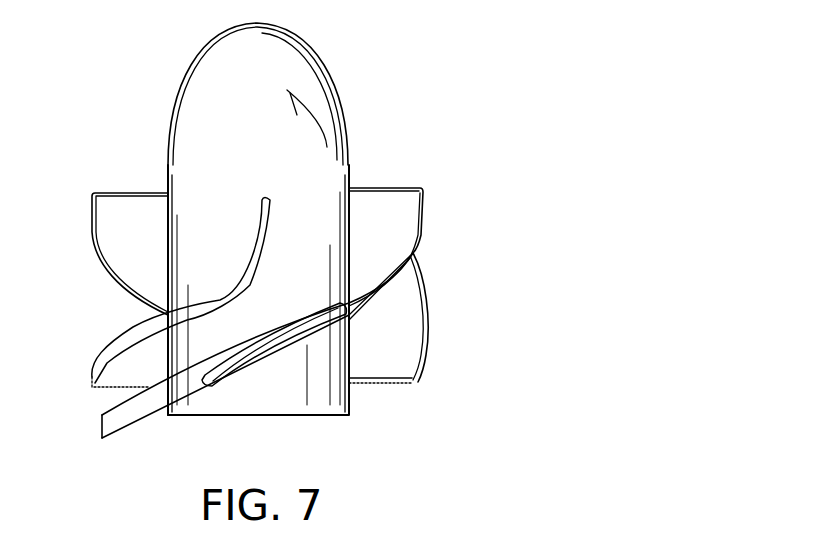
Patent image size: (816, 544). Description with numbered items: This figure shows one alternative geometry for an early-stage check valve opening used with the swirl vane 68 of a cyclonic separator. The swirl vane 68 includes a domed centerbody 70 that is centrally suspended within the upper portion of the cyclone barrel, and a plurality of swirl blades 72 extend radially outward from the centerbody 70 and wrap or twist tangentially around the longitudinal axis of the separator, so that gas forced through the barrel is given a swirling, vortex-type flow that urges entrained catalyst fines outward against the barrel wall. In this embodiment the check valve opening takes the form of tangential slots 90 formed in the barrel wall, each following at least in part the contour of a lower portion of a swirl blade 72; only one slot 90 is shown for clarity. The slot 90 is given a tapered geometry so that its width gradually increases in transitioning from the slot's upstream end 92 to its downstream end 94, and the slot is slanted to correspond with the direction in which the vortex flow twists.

The swirl vane device 68 is at (428, 59).
The domed centerbody 70 is at (199, 80).
The swirl blades 72 is at (92, 217).
The tangential slot 90 is at (196, 397).
The upstream end 92 is at (300, 316).
The downstream end 94 is at (117, 427).